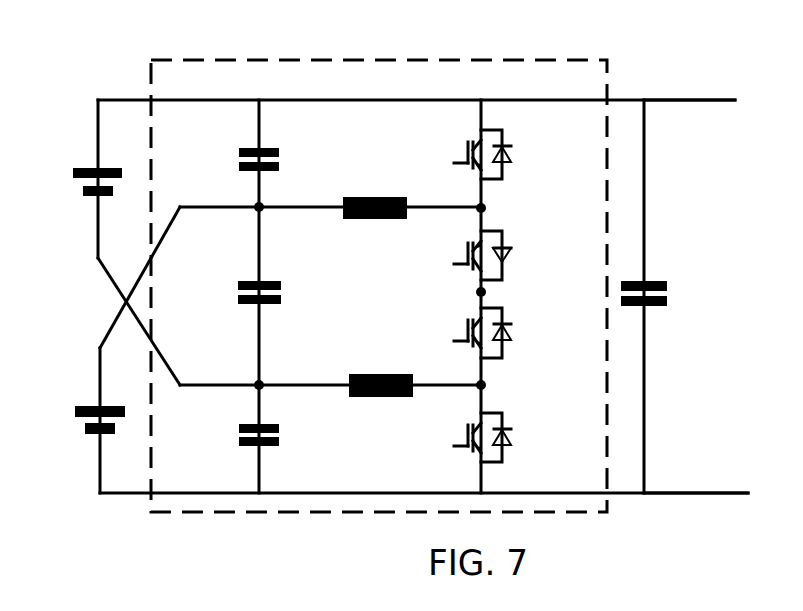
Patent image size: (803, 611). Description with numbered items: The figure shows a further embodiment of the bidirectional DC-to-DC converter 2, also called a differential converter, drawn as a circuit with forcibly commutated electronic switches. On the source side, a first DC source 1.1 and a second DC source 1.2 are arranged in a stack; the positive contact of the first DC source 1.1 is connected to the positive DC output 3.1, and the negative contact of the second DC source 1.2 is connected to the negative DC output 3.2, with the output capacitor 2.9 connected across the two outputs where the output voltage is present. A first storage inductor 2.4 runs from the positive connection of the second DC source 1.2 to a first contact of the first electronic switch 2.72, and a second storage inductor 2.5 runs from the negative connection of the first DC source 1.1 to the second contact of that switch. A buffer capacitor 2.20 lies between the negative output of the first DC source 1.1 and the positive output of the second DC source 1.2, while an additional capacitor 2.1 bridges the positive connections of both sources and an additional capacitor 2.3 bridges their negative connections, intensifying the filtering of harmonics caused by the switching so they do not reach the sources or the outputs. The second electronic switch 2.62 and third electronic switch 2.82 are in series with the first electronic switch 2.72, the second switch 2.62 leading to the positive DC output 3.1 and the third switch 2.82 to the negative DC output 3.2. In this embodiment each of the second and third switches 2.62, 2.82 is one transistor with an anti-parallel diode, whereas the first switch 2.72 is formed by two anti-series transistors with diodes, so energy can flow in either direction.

The bidirectional DC-to-DC converter 2 is at (361, 256).
The first DC source 1.1 is at (74, 146).
The second DC source 1.2 is at (76, 384).
The additional capacitor 2.1 is at (226, 140).
The buffer capacitor 2.20 is at (223, 274).
The additional capacitor 2.3 is at (226, 438).
The first storage inductor 2.4 is at (364, 179).
The second storage inductor 2.5 is at (371, 354).
The second electronic switch 2.62 is at (528, 150).
The first electronic switch 2.72 is at (502, 325).
The third electronic switch 2.82 is at (528, 412).
The output capacitor 2.9 is at (687, 267).
The positive DC output 3.1 is at (689, 126).
The negative DC output 3.2 is at (696, 461).